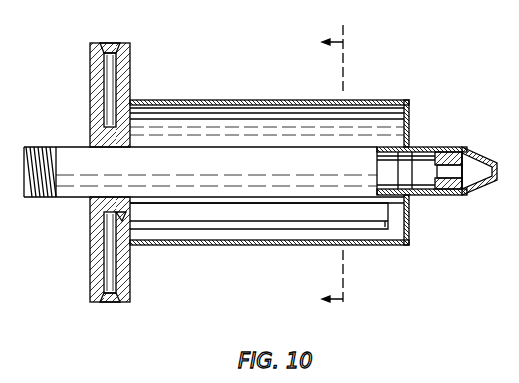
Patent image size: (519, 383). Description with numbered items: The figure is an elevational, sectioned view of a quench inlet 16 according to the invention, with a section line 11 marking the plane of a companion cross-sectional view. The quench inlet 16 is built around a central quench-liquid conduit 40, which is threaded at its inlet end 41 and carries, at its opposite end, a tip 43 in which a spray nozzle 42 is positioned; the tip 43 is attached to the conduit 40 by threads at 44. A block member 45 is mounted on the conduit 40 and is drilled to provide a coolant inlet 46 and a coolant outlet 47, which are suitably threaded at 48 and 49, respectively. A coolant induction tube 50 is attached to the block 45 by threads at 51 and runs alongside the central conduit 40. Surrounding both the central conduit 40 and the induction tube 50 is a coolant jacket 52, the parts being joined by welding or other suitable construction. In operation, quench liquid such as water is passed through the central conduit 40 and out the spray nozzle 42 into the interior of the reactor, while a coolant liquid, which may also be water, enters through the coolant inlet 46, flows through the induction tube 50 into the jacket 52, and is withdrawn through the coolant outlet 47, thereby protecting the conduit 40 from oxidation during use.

The quench inlet 16 is at (243, 88).
The central quench-liquid conduit 40 is at (83, 186).
The inlet end 41 is at (34, 148).
The spray nozzle 42 is at (452, 195).
The tip 43 is at (482, 153).
The threads 44 is at (425, 147).
The block member 45 is at (130, 86).
The coolant inlet 46 is at (108, 264).
The coolant outlet 47 is at (100, 78).
The threads 48 is at (115, 301).
The threads 49 is at (110, 44).
The coolant induction tube 50 is at (272, 229).
The threads 51 is at (121, 216).
The coolant jacket 52 is at (406, 100).
The section line 11 is at (378, 290).